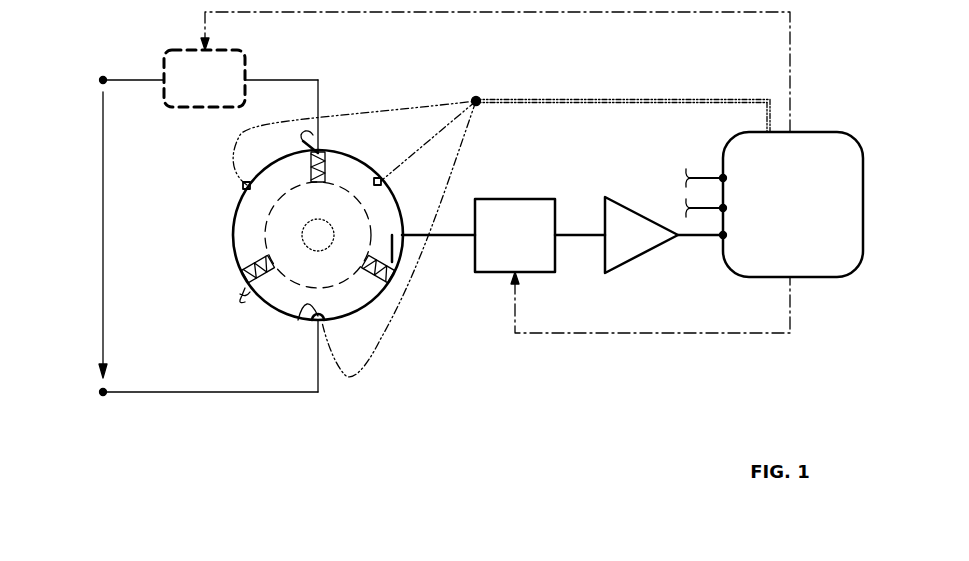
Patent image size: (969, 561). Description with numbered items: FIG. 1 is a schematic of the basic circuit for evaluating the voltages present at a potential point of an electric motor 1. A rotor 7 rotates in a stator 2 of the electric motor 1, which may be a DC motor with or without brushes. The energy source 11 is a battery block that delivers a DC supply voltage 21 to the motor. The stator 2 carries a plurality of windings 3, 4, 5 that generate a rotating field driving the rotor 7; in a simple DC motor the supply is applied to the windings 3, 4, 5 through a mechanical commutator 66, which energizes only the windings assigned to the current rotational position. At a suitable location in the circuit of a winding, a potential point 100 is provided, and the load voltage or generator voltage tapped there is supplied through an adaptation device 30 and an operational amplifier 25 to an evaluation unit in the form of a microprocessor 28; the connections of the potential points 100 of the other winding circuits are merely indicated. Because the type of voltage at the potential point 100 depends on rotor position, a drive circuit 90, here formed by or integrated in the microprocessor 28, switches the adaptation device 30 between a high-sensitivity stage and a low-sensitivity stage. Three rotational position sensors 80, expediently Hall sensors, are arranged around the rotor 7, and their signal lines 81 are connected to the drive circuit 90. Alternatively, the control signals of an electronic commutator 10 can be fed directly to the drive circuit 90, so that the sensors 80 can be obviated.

The electric motor 1 is at (224, 198).
The stator 2 is at (232, 250).
The winding 3 is at (245, 268).
The winding 4 is at (378, 284).
The winding 5 is at (326, 168).
The rotor 7 is at (262, 223).
The electronic commutator 10 is at (182, 80).
The energy source 11 is at (63, 295).
The supply voltage 21 is at (103, 177).
The operational amplifier 25 is at (619, 247).
The microprocessor 28 is at (780, 210).
The adaptation device 30 is at (504, 247).
The mechanical commutator 66 is at (313, 242).
The rotational position sensors 80 is at (250, 186).
The signal lines 81 is at (353, 115).
The drive circuit 90 is at (541, 172).
The potential point 100 is at (246, 281).